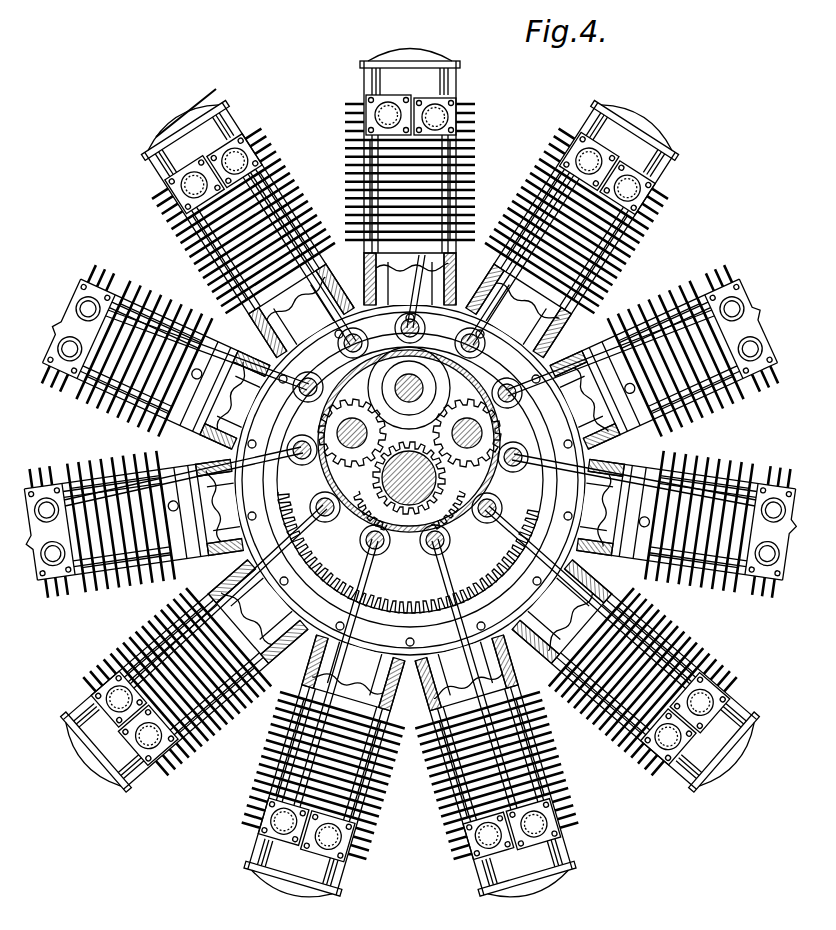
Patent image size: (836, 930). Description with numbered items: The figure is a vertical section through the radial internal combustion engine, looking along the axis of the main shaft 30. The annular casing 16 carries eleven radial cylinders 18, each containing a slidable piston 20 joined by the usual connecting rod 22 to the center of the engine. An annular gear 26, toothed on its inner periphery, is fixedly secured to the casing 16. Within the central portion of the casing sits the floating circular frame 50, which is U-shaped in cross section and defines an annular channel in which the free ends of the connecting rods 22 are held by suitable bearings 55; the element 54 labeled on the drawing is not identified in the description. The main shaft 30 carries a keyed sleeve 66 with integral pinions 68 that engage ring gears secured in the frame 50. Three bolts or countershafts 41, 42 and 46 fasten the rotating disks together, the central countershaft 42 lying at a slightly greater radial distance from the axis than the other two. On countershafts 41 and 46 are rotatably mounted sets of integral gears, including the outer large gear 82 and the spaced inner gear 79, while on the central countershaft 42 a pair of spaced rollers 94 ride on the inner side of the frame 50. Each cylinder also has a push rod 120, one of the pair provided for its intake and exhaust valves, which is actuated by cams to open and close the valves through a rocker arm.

The casing 16 is at (560, 345).
The radial cylinders 18 is at (381, 454).
The piston 20 is at (418, 481).
The connecting rod 22 is at (428, 300).
The annular gear 26 is at (497, 598).
The main shaft 30 is at (414, 545).
The countershaft 41 is at (302, 436).
The central countershaft 42 is at (504, 385).
The countershaft 46 is at (514, 445).
The floating circular frame 50 is at (596, 450).
The cylinder skirt 54 is at (450, 300).
The bearings 55 is at (422, 330).
The sleeve 66 is at (368, 522).
The pinions 68 is at (418, 490).
The inner gear 79 is at (360, 536).
The outer large gear 82 is at (314, 498).
The rollers 94 is at (378, 385).
The push rod 120 is at (222, 108).